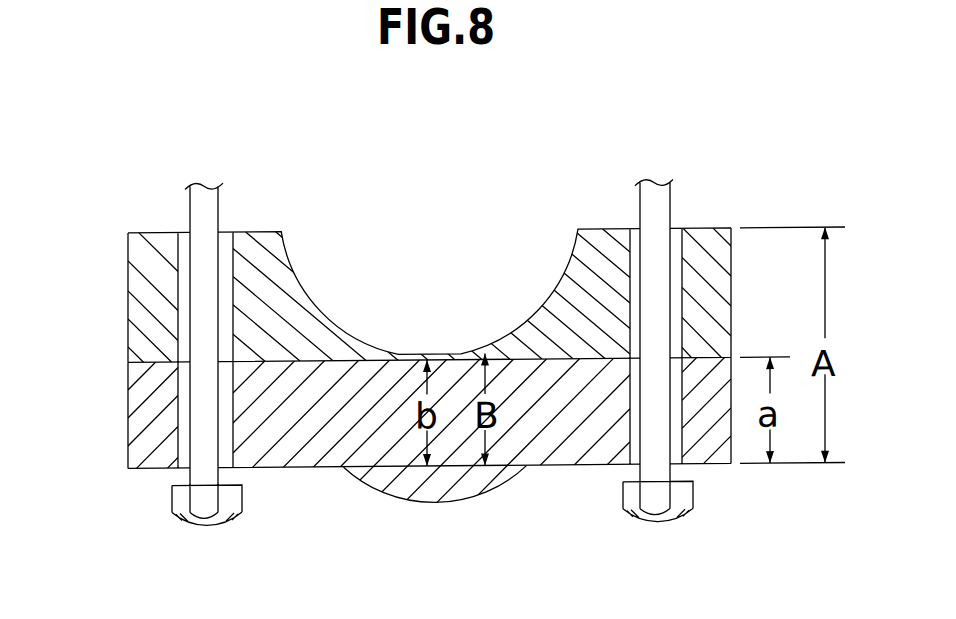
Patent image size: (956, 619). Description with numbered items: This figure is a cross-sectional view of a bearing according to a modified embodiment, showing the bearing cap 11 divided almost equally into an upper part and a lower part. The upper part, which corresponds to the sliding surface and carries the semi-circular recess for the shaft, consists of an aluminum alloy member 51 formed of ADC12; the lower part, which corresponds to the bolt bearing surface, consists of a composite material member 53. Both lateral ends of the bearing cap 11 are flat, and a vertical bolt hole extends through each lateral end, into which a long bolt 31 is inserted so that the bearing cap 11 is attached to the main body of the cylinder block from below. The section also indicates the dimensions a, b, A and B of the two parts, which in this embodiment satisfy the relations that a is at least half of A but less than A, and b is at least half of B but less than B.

The bearing cap 11 is at (385, 334).
The aluminum alloy member 51 is at (597, 278).
The composite material member 53 is at (557, 435).
The long bolt 31 is at (207, 456).